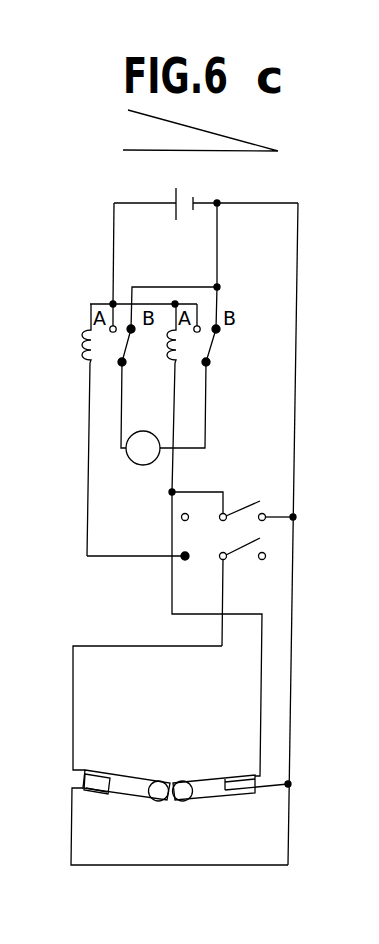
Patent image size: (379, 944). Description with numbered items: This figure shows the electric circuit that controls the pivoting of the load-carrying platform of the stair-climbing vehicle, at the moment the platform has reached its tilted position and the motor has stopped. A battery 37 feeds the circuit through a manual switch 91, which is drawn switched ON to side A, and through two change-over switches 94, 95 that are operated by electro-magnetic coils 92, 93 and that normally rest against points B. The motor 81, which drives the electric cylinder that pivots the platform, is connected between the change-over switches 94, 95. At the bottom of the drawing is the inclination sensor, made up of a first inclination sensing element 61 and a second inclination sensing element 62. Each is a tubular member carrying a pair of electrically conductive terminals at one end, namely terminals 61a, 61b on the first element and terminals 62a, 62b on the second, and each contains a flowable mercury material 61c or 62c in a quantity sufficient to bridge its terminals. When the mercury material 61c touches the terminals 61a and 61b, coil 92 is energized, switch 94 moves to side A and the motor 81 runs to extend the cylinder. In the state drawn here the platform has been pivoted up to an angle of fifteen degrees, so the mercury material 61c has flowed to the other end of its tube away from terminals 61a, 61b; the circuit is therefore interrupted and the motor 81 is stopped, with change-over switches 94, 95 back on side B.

The battery 37 is at (188, 198).
The electro-magnetic coil 92 is at (83, 352).
The electro-magnetic coil 93 is at (167, 350).
The change-over switch 94 is at (125, 356).
The change-over switch 95 is at (212, 344).
The motor 81 is at (135, 466).
The manual switch 91 is at (243, 505).
The first inclination sensing element 61 is at (137, 777).
The electrically conductive terminal 61a is at (103, 793).
The electrically conductive terminal 61b is at (96, 771).
The flowable mercury material 61c is at (163, 802).
The second inclination sensing element 62 is at (217, 776).
The electrically conductive terminal 62a is at (247, 794).
The electrically conductive terminal 62b is at (241, 777).
The flowable mercury material 62c is at (182, 801).